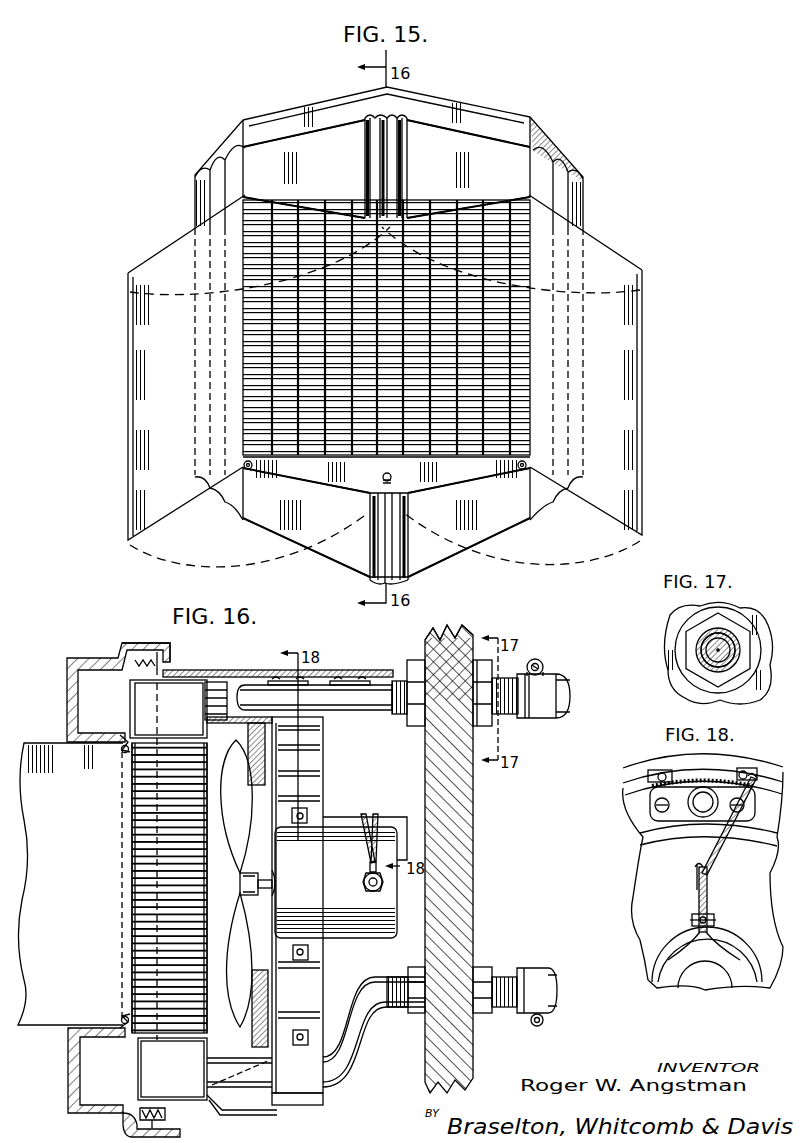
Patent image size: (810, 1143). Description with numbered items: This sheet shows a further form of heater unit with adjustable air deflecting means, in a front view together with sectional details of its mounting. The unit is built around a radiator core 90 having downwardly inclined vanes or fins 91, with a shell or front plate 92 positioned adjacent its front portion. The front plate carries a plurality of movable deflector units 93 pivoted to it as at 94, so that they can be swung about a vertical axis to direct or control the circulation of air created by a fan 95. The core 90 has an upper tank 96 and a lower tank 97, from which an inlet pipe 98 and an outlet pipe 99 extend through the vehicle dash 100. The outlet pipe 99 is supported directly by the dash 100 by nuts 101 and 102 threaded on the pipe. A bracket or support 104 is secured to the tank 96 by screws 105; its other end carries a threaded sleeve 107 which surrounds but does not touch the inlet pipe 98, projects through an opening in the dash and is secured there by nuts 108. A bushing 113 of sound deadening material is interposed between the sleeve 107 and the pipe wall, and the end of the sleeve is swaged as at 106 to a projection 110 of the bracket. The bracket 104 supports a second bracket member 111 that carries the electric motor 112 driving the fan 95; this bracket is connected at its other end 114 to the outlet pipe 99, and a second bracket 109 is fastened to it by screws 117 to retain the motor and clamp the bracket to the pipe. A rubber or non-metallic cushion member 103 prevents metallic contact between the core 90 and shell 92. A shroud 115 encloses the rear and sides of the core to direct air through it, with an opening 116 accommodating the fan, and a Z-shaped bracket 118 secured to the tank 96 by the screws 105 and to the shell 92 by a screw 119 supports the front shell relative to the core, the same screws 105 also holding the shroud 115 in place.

In FIG. 15, the radiator core 90 is at (333, 240).
In FIG. 16, the radiator core 90 is at (147, 928).
In FIG. 16, the vanes or fins 91 is at (137, 900).
In FIG. 15, the shell or front plate 92 is at (570, 207).
In FIG. 16, the shell or front plate 92 is at (67, 712).
In FIG. 18, the shell or front plate 92 is at (633, 767).
In FIG. 15, the movable deflector units 93 is at (142, 343).
In FIG. 16, the movable deflector units 93 is at (70, 884).
In FIG. 15, the pivot 94 is at (237, 477).
In FIG. 16, the pivot 94 is at (125, 754).
In FIG. 16, the fan 95 is at (240, 1022).
In FIG. 16, the upper tank 96 is at (168, 709).
In FIG. 16, the lower tank 97 is at (172, 1083).
In FIG. 16, the inlet pipe 98 is at (330, 692).
In FIG. 17, the inlet pipe 98 is at (714, 650).
In FIG. 16, the outlet pipe 99 is at (363, 1067).
In FIG. 16, the vehicle dash 100 is at (475, 830).
In FIG. 16, the nut 101 is at (410, 1012).
In FIG. 16, the nut 102 is at (483, 1014).
In FIG. 15, the non-metallic cushion member 103 is at (492, 460).
In FIG. 16, the non-metallic cushion member 103 is at (128, 733).
In FIG. 16, the bracket or support 104 is at (378, 672).
In FIG. 18, the bracket or support 104 is at (650, 803).
In FIG. 16, the screws 105 is at (228, 693).
In FIG. 18, the screws 105 is at (660, 812).
In FIG. 16, the swaged connection 106 is at (393, 717).
In FIG. 16, the threaded sleeve 107 is at (507, 675).
In FIG. 17, the threaded sleeve 107 is at (707, 631).
In FIG. 16, the nuts 108 is at (422, 733).
In FIG. 17, the nuts 108 is at (690, 667).
In FIG. 16, the second bracket 109 is at (307, 890).
In FIG. 18, the second bracket 109 is at (673, 948).
In FIG. 16, the projection 110 is at (405, 732).
In FIG. 16, the second bracket member 111 is at (317, 743).
In FIG. 18, the second bracket member 111 is at (722, 853).
In FIG. 16, the motor 112 is at (340, 833).
In FIG. 16, the bushing 113 is at (459, 637).
In FIG. 17, the bushing 113 is at (723, 632).
In FIG. 16, the end of bracket 114 is at (303, 1104).
In FIG. 16, the shroud 115 is at (212, 1106).
In FIG. 16, the opening 116 is at (263, 983).
In FIG. 18, the opening 116 is at (670, 840).
In FIG. 16, the screws 117 is at (328, 955).
In FIG. 18, the screws 117 is at (717, 920).
In FIG. 16, the Z-shaped bracket 118 is at (227, 670).
In FIG. 18, the Z-shaped bracket 118 is at (680, 772).
In FIG. 16, the screw 119 is at (172, 645).
In FIG. 18, the screw 119 is at (640, 787).